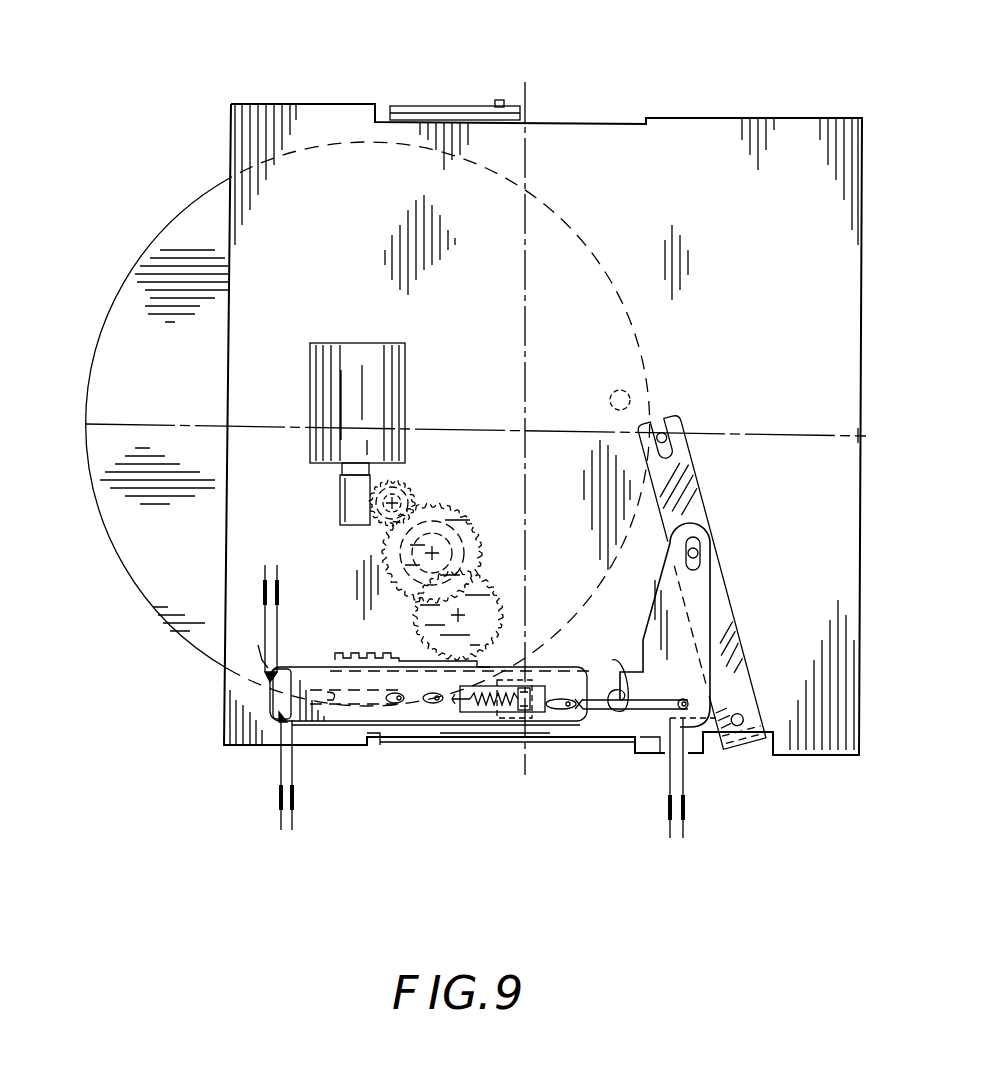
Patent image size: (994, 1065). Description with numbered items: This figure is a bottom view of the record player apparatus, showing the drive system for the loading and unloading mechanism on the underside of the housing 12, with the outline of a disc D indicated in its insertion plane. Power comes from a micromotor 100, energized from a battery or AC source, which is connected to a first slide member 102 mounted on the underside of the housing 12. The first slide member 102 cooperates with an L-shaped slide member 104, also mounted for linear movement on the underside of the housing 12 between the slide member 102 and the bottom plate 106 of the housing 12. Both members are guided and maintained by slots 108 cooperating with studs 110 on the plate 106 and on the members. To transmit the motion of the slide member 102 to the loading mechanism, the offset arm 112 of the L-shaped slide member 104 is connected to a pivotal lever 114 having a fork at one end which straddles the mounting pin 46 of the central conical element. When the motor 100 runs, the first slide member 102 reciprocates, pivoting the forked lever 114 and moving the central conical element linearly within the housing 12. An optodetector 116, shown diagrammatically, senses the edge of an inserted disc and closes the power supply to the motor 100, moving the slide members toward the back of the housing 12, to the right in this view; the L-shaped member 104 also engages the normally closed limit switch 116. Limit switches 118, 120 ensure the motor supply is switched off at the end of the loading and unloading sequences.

The housing 12 is at (722, 106).
The disc D is at (173, 226).
The micromotor 100 is at (405, 366).
The first slide member 102 is at (400, 716).
The L-shaped slide member 104 is at (617, 720).
The bottom plate 106 is at (568, 740).
The slots 108 is at (322, 690).
The studs 110 is at (718, 683).
The offset arm 112 is at (705, 602).
The pivotal lever 114 is at (690, 482).
The optodetector / limit switch 116 is at (632, 396).
The limit switch 118 is at (292, 778).
The limit switch 120 is at (667, 790).
The mounting pin 46 is at (672, 431).